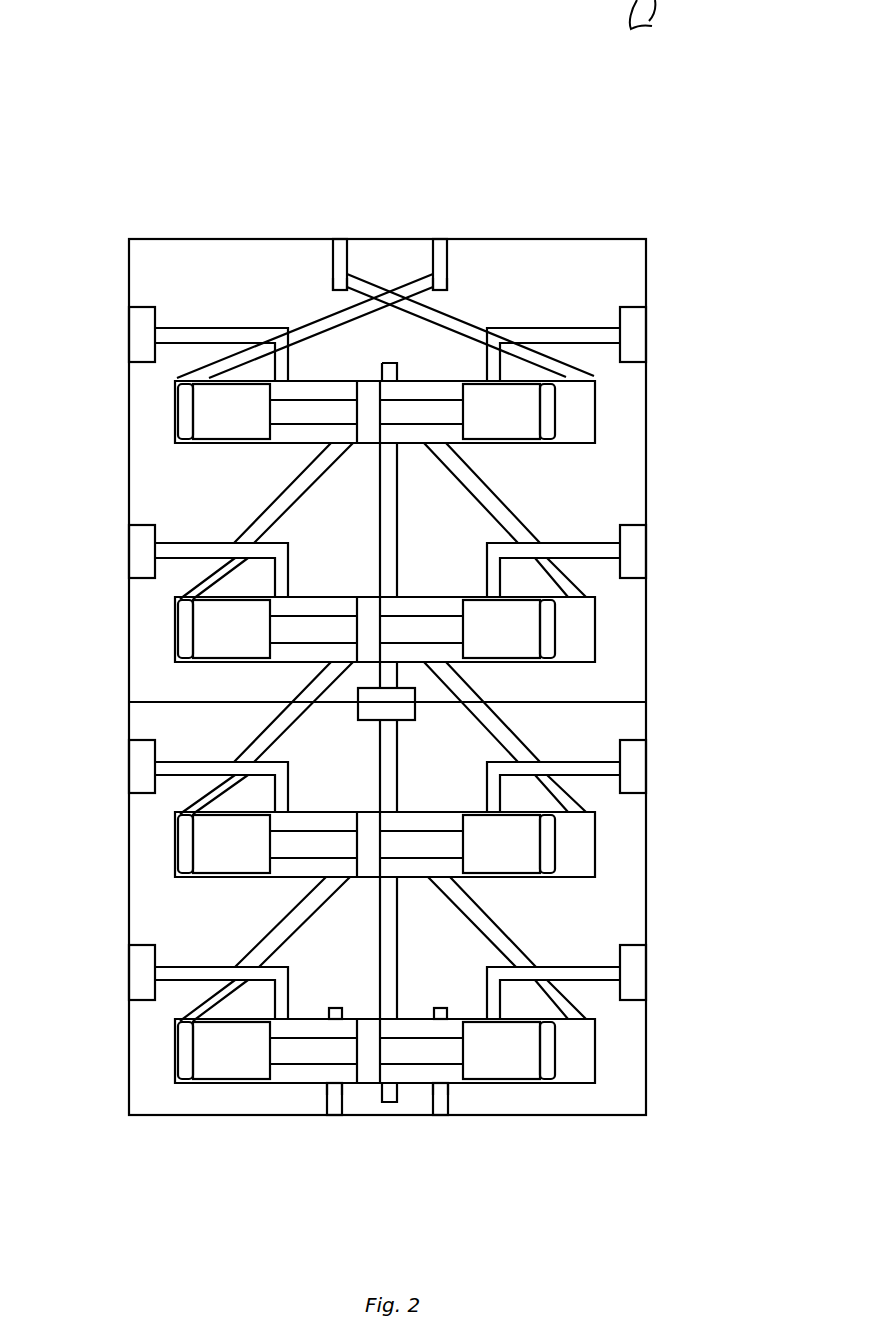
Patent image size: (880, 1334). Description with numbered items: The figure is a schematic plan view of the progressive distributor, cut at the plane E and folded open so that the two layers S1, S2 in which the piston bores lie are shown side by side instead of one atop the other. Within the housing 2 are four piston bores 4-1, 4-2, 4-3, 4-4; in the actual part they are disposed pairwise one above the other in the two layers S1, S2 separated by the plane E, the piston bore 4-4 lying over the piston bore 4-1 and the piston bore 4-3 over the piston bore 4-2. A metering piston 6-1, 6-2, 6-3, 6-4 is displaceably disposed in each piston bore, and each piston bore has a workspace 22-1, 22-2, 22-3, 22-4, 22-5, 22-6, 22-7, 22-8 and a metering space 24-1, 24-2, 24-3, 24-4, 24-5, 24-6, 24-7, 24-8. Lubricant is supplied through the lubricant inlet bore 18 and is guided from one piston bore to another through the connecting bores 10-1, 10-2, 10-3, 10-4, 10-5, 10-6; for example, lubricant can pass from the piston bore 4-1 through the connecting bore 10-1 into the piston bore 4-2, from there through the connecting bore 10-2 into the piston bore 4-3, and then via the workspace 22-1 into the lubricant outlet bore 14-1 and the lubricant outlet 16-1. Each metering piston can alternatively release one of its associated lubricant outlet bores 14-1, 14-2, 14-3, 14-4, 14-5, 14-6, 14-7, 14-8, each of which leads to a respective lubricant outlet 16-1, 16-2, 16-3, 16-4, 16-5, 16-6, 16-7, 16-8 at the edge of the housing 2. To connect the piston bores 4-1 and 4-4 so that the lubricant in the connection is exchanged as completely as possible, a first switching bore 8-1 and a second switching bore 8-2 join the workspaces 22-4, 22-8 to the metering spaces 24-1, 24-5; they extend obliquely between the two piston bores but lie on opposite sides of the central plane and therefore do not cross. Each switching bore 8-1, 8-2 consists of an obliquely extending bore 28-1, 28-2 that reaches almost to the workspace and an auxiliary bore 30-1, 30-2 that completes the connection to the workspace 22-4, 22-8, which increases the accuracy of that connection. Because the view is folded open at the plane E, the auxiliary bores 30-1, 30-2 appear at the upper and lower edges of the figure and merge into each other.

The frame / substrate 2 is at (641, 252).
The layer S1 is at (158, 263).
The layer S2 is at (152, 1101).
The plane E is at (660, 702).
The lubricant inlet bore 18 is at (412, 720).
The first switching bore 8-1 is at (448, 250).
The second switching bore 8-2 is at (334, 247).
The auxiliary bore 30-1 is at (452, 272).
The auxiliary bore 30-2 is at (336, 274).
The obliquely extending bore 28-1 is at (318, 326).
The obliquely extending bore 28-2 is at (469, 326).
The piston bore 4-1 is at (596, 421).
The piston bore 4-2 is at (594, 638).
The piston bore 4-3 is at (596, 834).
The piston bore 4-4 is at (596, 1036).
The metering piston 6-1 is at (528, 401).
The metering piston 6-2 is at (527, 661).
The metering piston 6-3 is at (526, 879).
The metering piston 6-4 is at (528, 1071).
The connecting bore 10-1 is at (472, 501).
The connecting bore 10-2 is at (478, 746).
The connecting bore 10-3 is at (482, 928).
The connecting bore 10-4 is at (288, 493).
The connecting bore 10-5 is at (258, 740).
The connecting bore 10-6 is at (290, 920).
The lubricant outlet bore 14-1 is at (601, 329).
The lubricant outlet bore 14-2 is at (572, 601).
The lubricant outlet bore 14-3 is at (580, 817).
The lubricant outlet bore 14-4 is at (593, 1023).
The lubricant outlet bore 14-5 is at (186, 329).
The lubricant outlet bore 14-6 is at (168, 560).
The lubricant outlet bore 14-7 is at (168, 778).
The lubricant outlet bore 14-8 is at (168, 985).
The lubricant outlet 16-1 is at (652, 316).
The lubricant outlet 16-2 is at (656, 532).
The lubricant outlet 16-3 is at (632, 759).
The lubricant outlet 16-4 is at (649, 961).
The lubricant outlet 16-5 is at (132, 318).
The lubricant outlet 16-6 is at (132, 544).
The lubricant outlet 16-7 is at (132, 757).
The lubricant outlet 16-8 is at (132, 966).
The workspace 22-1 is at (418, 388).
The workspace 22-2 is at (418, 604).
The workspace 22-3 is at (418, 818).
The workspace 22-4 is at (440, 1012).
The workspace 22-5 is at (308, 388).
The workspace 22-6 is at (308, 604).
The workspace 22-7 is at (308, 818).
The workspace 22-8 is at (333, 1012).
The metering space 24-1 is at (580, 433).
The metering space 24-2 is at (582, 621).
The metering space 24-3 is at (583, 853).
The metering space 24-4 is at (585, 1053).
The metering space 24-5 is at (177, 436).
The metering space 24-6 is at (174, 651).
The metering space 24-7 is at (176, 856).
The metering space 24-8 is at (176, 1051).